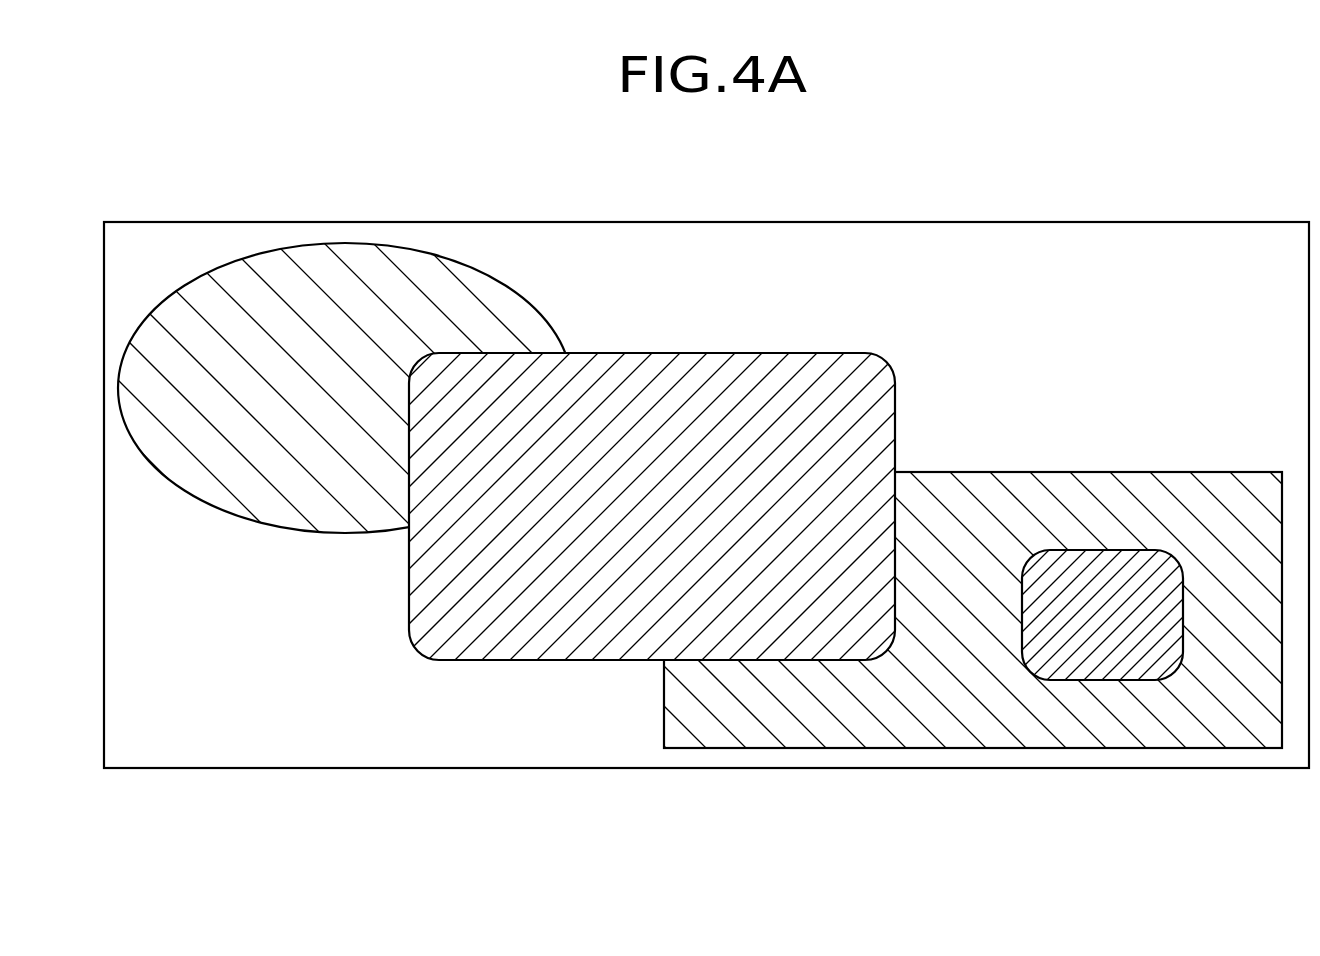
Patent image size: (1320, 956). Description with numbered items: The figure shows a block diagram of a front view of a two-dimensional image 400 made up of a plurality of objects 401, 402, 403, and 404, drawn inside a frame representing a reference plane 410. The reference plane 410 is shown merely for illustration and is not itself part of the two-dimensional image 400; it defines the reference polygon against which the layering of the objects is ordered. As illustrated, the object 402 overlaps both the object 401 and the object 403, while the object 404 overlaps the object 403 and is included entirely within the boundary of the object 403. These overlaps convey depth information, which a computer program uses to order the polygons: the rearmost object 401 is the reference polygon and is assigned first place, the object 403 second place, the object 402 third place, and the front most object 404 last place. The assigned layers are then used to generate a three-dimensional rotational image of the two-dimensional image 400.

The two-dimensional image 400 is at (1082, 337).
The object 401 is at (307, 533).
The object 402 is at (736, 352).
The object 403 is at (1025, 471).
The object 404 is at (1102, 550).
The reference plane 410 is at (1075, 769).